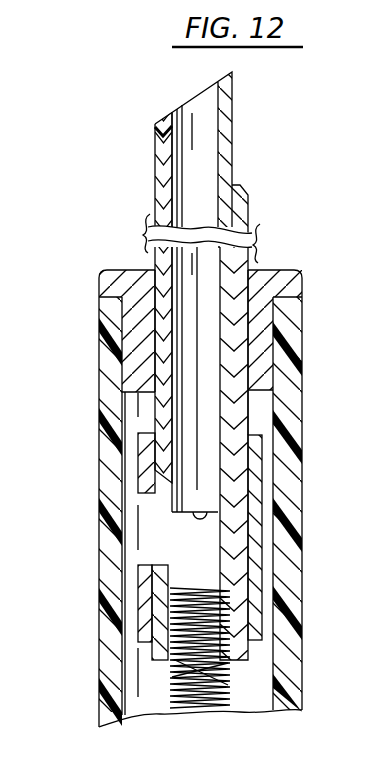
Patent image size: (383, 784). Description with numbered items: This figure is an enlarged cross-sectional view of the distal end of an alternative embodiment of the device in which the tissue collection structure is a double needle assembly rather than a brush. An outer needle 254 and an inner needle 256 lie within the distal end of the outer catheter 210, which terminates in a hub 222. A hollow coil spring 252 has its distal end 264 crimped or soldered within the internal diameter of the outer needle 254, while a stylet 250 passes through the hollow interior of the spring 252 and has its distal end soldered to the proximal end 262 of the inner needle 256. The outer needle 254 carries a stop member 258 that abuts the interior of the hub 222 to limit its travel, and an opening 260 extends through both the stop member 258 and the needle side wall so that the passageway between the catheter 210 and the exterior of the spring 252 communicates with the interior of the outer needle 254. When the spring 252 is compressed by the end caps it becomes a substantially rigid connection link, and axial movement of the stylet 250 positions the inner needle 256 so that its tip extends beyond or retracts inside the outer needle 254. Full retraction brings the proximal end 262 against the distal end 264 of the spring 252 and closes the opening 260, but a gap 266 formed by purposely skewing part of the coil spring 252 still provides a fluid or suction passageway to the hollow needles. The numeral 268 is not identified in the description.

The outer catheter 210 is at (290, 623).
The hub 222 is at (292, 280).
The stylet 250 is at (220, 555).
The spring 252 is at (172, 710).
The outer needle 254 is at (175, 412).
The inner needle 256 is at (232, 190).
The stop member 258 is at (145, 462).
The opening 260 is at (148, 565).
The proximal end 262 is at (219, 517).
The distal end 264 is at (188, 588).
The gap 266 is at (228, 683).
The outer sleeve 268 is at (157, 125).